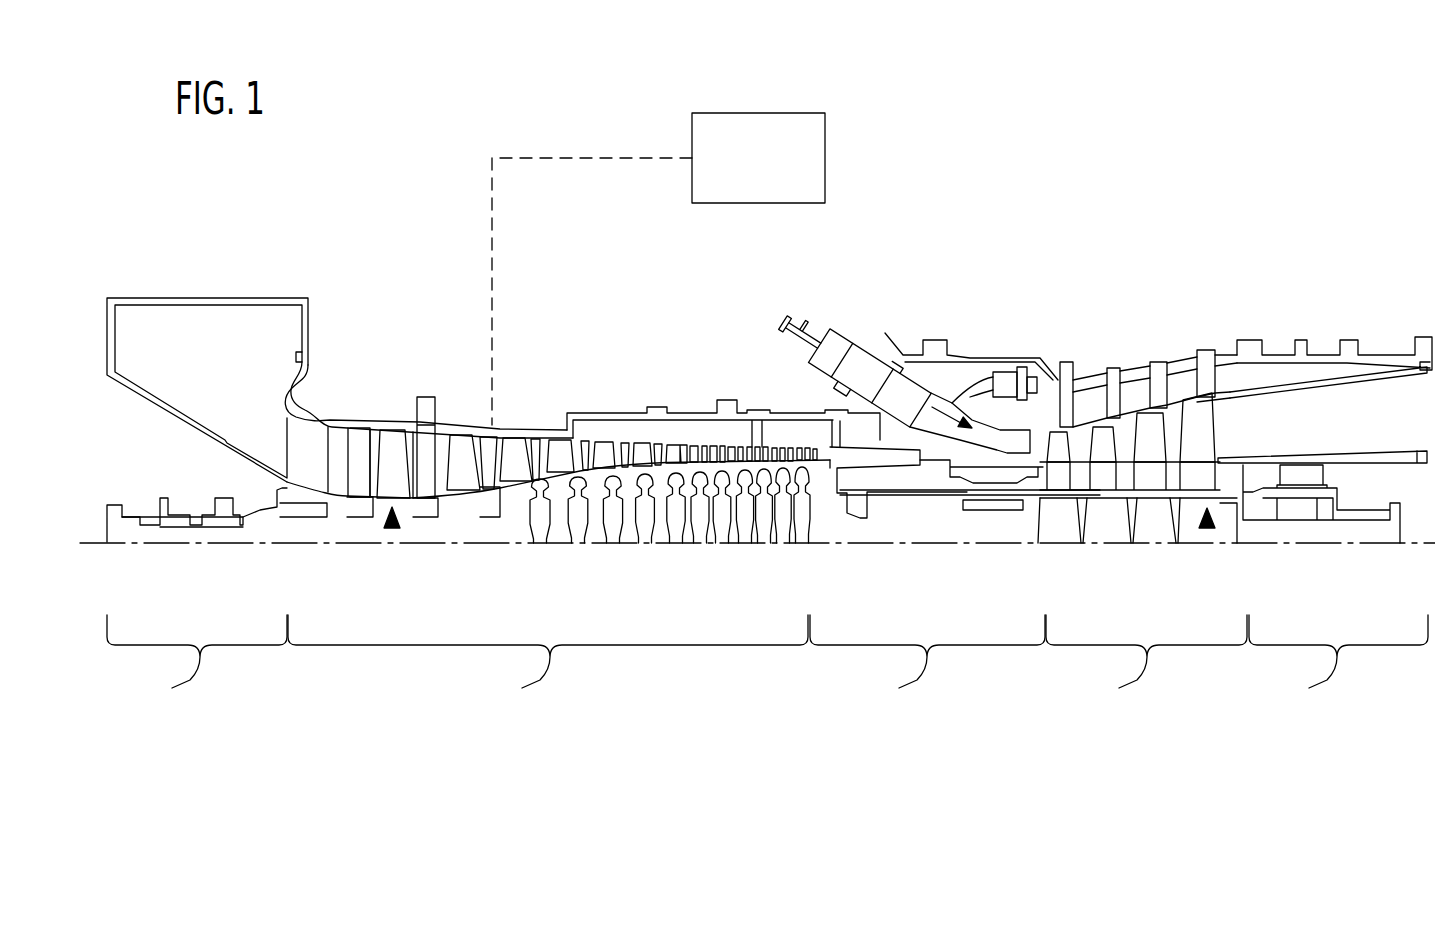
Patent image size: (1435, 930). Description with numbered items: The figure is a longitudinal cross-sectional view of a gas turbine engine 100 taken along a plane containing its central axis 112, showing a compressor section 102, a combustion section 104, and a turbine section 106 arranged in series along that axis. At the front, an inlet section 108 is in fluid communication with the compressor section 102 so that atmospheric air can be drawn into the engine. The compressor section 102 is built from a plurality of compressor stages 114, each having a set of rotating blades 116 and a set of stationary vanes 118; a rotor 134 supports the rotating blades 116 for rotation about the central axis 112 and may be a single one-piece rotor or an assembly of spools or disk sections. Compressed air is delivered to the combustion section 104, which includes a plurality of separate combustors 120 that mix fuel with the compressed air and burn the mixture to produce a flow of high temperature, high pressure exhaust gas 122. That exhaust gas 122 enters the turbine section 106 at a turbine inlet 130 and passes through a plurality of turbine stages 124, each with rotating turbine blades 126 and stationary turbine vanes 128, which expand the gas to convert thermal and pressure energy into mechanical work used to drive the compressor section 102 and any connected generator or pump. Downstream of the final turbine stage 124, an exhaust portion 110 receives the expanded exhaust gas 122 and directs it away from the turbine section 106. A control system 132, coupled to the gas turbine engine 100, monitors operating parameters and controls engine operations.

The gas turbine engine 100 is at (1117, 90).
The compressor section 102 is at (623, 552).
The combustion section 104 is at (931, 516).
The turbine section 106 is at (1142, 531).
The inlet section 108 is at (340, 503).
The exhaust portion 110 is at (1325, 522).
The central axis 112 is at (884, 545).
The compressor stage 114 is at (393, 522).
The rotating blades 116 is at (392, 450).
The stationary vanes 118 is at (362, 450).
The combustor 120 is at (842, 325).
The exhaust gas 122 is at (957, 427).
The turbine stage 124 is at (1207, 528).
The rotating turbine blades 126 is at (1204, 434).
The stationary turbine vanes 128 is at (1175, 423).
The turbine inlet 130 is at (1023, 437).
The control system 132 is at (825, 160).
The rotor 134 is at (257, 530).